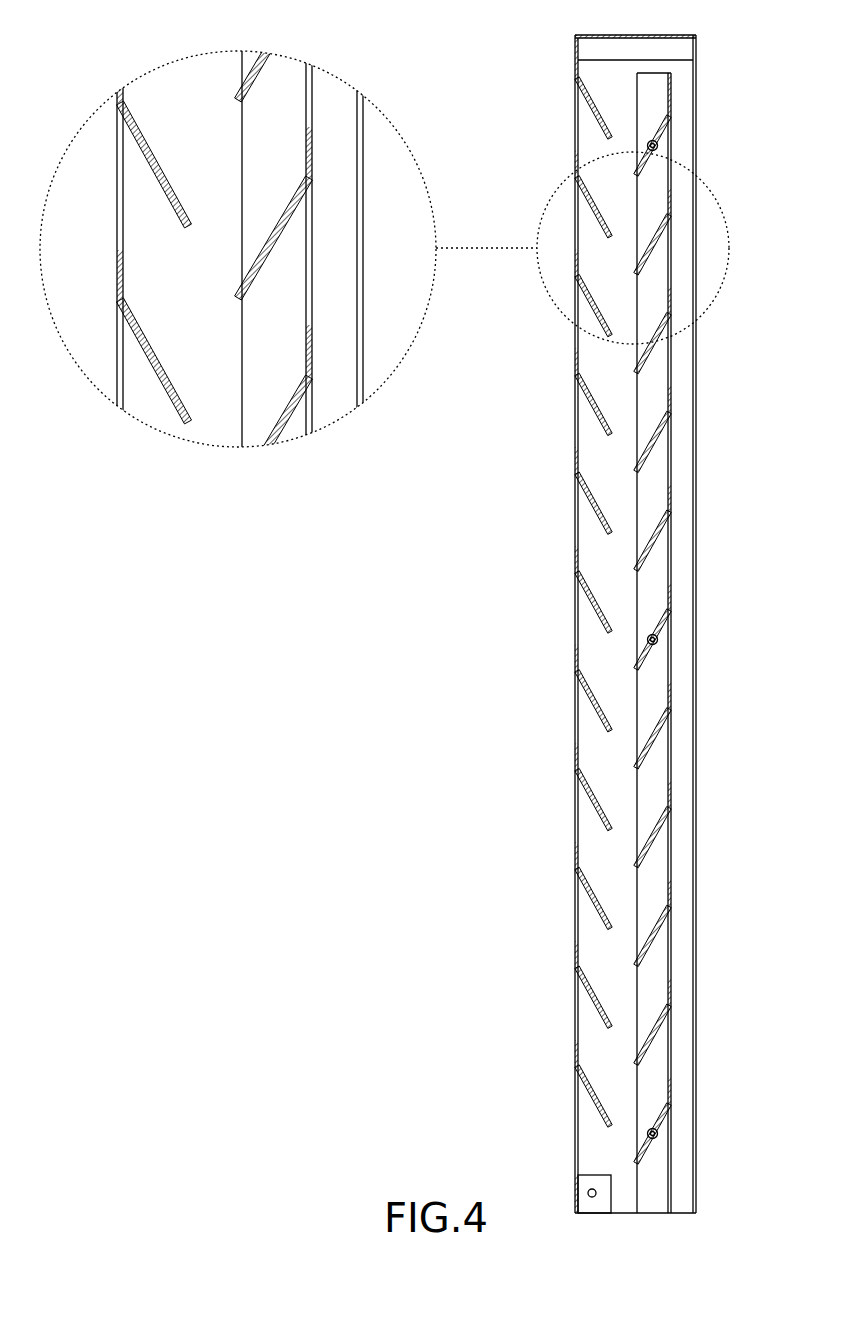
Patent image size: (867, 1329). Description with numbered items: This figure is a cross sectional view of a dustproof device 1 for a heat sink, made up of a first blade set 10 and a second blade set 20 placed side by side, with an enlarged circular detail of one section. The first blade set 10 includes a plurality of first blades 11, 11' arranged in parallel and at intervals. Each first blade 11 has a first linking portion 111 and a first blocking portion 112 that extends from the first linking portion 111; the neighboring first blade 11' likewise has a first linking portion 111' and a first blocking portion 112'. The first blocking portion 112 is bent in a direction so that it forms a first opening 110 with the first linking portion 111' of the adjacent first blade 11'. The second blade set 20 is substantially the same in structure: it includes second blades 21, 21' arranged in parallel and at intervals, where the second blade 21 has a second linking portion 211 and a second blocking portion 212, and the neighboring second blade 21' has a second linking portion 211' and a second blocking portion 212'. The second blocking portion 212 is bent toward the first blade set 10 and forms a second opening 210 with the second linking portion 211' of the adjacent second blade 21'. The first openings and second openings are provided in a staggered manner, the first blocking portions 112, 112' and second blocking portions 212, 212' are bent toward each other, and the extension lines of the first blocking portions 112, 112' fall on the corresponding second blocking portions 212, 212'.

The air guiding device 1 is at (443, 40).
The first blade set 10 is at (572, 53).
The first opening 110 is at (577, 233).
The first blade 11 is at (317, 144).
The first linking portion 111 is at (347, 113).
The first blocking portion 112 is at (317, 169).
The first blade 11' is at (341, 351).
The first linking portion 111' is at (347, 275).
The first blocking portion 112' is at (341, 363).
The second blade set 20 is at (672, 88).
The second opening 210 is at (670, 262).
The second blade 21 is at (540, 213).
The second linking portion 211 is at (552, 171).
The second blocking portion 212 is at (517, 238).
The second blade 21' is at (542, 390).
The second linking portion 211' is at (555, 329).
The second blocking portion 212' is at (520, 405).